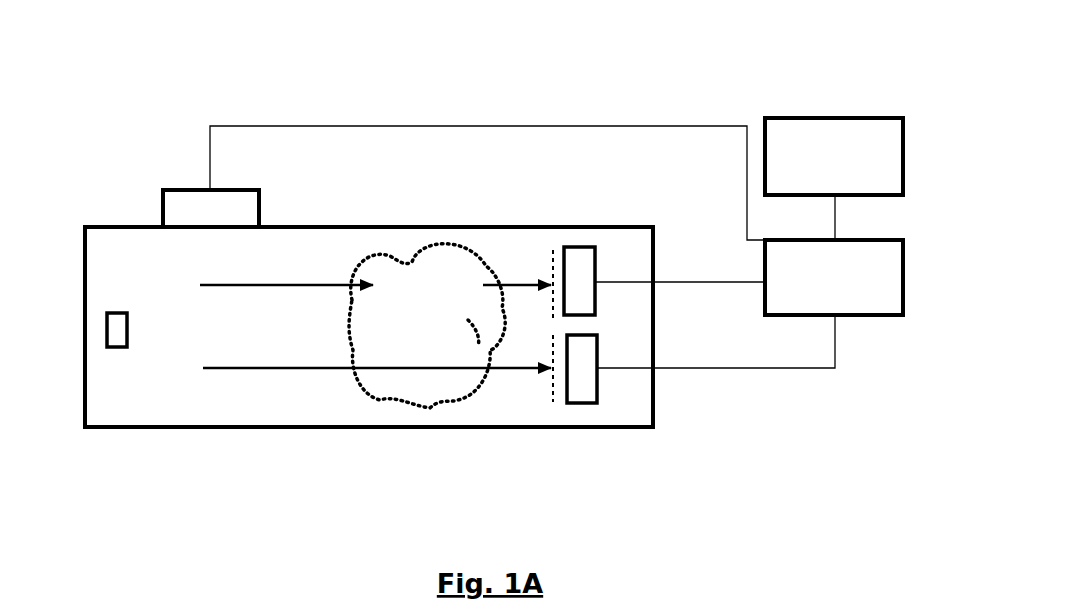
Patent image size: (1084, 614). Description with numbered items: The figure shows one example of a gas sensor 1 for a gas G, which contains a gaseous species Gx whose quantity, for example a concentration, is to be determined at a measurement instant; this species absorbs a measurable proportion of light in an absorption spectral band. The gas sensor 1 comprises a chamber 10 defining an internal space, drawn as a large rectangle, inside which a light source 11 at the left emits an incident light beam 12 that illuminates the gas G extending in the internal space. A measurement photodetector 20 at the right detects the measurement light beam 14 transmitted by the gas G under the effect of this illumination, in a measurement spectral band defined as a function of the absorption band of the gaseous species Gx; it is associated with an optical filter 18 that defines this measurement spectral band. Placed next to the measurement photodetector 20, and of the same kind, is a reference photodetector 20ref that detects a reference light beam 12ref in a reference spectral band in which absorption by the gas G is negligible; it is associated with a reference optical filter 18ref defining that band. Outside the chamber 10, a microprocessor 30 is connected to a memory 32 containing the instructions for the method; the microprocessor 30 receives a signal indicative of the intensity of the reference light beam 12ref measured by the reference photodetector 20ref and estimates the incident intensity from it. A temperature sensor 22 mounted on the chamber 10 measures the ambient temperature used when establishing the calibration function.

The gas sensor 1 is at (85, 180).
The chamber 10 is at (359, 434).
The light source 11 is at (116, 360).
The incident light beam 12 is at (341, 280).
The reference light beam 12ref is at (229, 376).
The measurement light beam 14 is at (504, 280).
The optical filter 18 is at (549, 243).
The reference optical filter 18ref is at (555, 405).
The measurement photodetector 20 is at (580, 245).
The reference photodetector 20ref is at (586, 384).
The temperature sensor 22 is at (203, 204).
The microprocessor 30 is at (842, 291).
The memory 32 is at (829, 152).
The gas G is at (408, 278).
The gaseous species Gx is at (442, 260).